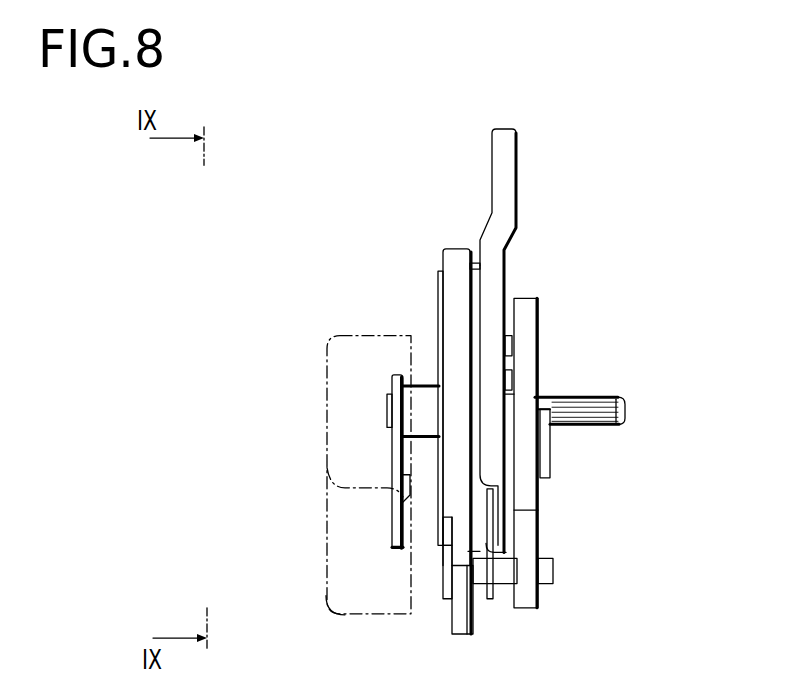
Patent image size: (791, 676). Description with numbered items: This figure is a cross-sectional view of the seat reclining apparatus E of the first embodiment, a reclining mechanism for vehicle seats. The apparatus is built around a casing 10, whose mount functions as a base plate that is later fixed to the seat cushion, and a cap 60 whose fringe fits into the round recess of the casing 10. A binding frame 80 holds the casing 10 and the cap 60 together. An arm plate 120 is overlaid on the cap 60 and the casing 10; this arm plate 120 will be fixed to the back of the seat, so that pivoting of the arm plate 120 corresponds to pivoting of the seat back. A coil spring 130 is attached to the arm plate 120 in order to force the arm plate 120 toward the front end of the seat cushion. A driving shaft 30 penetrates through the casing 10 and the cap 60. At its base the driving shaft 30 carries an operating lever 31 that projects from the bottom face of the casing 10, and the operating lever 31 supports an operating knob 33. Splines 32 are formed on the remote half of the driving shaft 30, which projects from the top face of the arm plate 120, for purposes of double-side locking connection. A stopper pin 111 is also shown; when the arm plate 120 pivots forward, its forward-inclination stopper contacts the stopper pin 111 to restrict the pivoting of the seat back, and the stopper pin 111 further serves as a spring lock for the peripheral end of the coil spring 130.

The casing 10 is at (438, 288).
The driving shaft 30 is at (592, 425).
The operating lever 31 is at (397, 515).
The splines 32 is at (588, 393).
The operating knob 33 is at (333, 568).
The cap 60 is at (481, 275).
The binding frame 80 is at (453, 243).
The stopper pin 111 is at (553, 567).
The arm plate 120 is at (520, 175).
The coil spring 130 is at (538, 313).
The seat reclining apparatus E is at (474, 161).